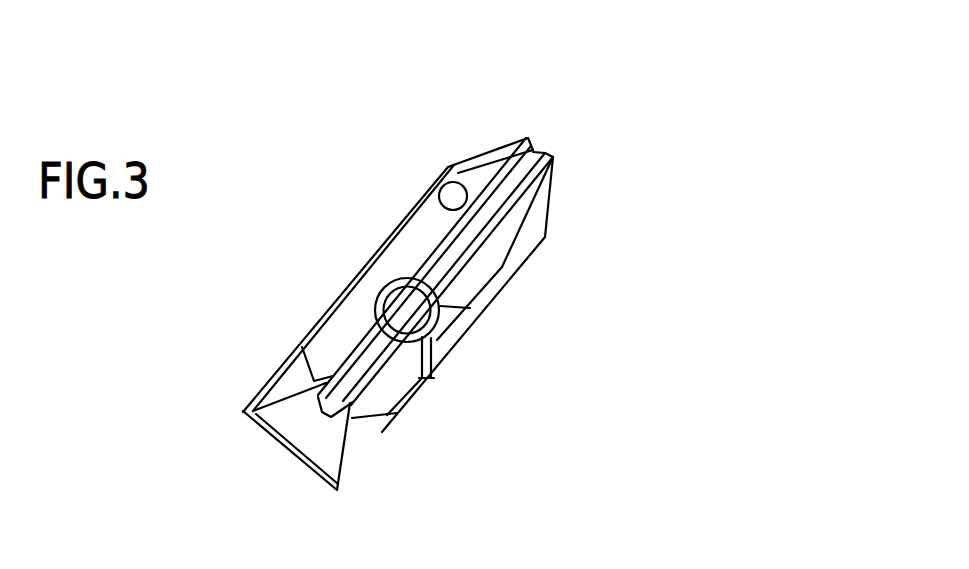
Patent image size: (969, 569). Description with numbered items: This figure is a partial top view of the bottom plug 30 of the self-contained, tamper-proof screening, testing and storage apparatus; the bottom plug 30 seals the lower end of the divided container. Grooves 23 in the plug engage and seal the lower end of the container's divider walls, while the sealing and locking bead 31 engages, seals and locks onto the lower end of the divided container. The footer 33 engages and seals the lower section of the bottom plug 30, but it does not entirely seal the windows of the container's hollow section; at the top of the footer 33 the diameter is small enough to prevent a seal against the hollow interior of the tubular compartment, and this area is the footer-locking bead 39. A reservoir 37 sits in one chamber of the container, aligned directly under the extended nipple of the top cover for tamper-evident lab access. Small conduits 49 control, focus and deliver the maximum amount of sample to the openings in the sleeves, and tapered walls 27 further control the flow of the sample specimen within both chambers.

The grooves 23 is at (541, 143).
The tapered walls 27 is at (360, 425).
The bottom plug 30 is at (570, 241).
The sealing and locking bead 31 is at (357, 466).
The footer 33 is at (404, 289).
The reservoir 37 is at (452, 192).
The footer-locking bead 39 is at (378, 319).
The small conduits 49 is at (441, 324).